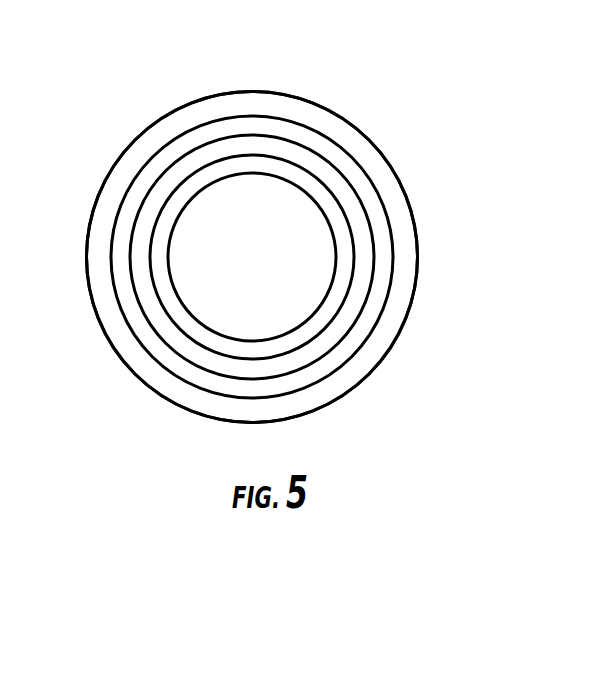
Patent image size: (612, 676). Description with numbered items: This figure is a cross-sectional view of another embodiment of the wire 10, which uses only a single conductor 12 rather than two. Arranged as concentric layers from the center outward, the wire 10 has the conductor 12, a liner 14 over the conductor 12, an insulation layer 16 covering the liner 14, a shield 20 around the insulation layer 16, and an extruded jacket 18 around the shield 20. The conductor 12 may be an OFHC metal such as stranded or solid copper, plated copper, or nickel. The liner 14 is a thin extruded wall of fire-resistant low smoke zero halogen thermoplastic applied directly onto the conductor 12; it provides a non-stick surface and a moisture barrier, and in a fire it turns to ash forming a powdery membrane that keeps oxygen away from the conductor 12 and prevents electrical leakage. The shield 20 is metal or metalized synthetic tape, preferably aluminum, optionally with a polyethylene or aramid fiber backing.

The wire 10 is at (178, 67).
The conductor 12 is at (283, 338).
The liner 14 is at (322, 333).
The insulation layer 16 is at (363, 306).
The extruded jacket 18 is at (418, 252).
The shield 20 is at (342, 148).